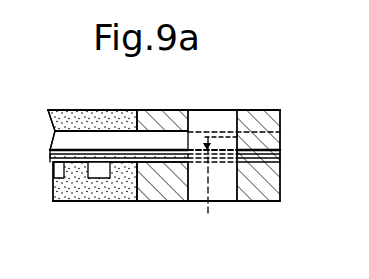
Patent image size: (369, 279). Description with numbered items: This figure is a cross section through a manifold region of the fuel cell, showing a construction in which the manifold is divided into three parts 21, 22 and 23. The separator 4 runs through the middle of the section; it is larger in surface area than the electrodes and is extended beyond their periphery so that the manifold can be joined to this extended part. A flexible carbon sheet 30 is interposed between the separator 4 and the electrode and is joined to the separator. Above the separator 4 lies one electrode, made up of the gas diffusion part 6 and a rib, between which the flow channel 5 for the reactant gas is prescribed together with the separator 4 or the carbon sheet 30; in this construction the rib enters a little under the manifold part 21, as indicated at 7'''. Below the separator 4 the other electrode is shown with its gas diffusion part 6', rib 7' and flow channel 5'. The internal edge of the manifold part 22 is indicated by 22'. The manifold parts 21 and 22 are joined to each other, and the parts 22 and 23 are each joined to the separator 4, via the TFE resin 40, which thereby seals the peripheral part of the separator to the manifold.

The gas diffusion part 6 is at (164, 104).
The flow channel 5 is at (119, 114).
The rib 7''' is at (162, 107).
The manifold part 21 is at (185, 110).
The TFE resin 40 is at (280, 115).
The manifold part 22 is at (264, 129).
The separator 4 is at (282, 158).
The flexible carbon sheet 30 is at (58, 156).
The gas diffusion part 6' is at (164, 199).
The rib 7' is at (106, 206).
The flow channel 5' is at (110, 206).
The internal edge of manifold 22' is at (212, 188).
The manifold part 23 is at (172, 202).